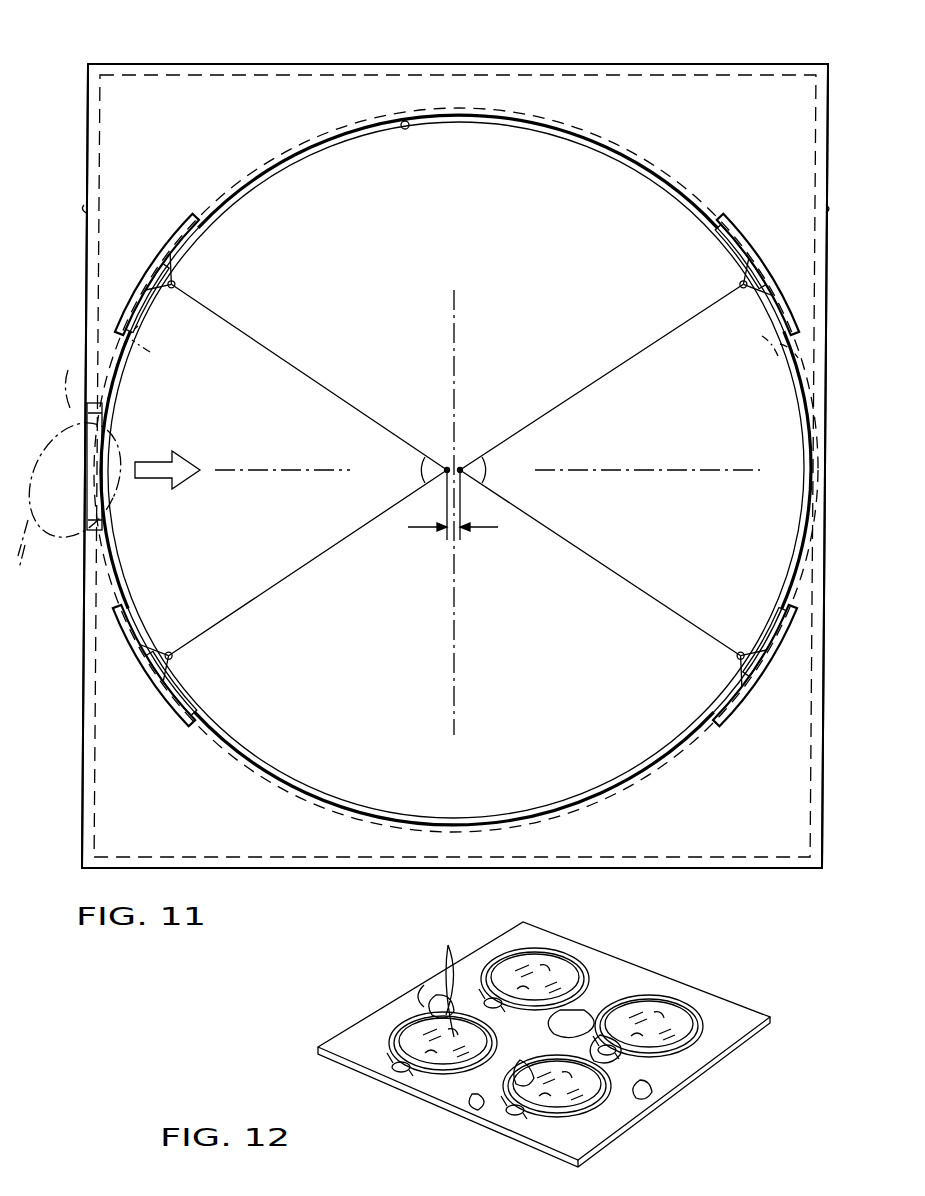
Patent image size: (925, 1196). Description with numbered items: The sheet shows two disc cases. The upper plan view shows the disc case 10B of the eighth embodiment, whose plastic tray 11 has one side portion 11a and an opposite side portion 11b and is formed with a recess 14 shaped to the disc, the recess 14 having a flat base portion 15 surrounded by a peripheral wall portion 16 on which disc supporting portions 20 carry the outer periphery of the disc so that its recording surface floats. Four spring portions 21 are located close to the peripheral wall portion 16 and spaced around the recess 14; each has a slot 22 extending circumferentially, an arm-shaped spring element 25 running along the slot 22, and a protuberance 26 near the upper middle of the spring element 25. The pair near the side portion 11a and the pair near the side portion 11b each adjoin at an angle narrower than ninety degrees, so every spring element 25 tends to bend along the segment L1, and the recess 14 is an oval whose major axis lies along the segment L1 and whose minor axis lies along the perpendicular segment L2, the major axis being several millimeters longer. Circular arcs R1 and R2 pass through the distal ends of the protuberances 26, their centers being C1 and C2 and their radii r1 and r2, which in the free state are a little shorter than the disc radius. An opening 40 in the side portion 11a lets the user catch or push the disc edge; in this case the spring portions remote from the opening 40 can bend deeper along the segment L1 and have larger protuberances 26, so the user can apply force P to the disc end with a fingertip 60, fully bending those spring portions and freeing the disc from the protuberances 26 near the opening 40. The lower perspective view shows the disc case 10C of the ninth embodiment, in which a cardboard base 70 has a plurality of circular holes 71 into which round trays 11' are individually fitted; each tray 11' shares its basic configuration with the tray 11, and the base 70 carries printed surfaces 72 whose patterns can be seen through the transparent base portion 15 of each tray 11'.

In FIG. 11, the disc case 10B is at (734, 68).
In FIG. 12, the disc case 10C is at (420, 968).
In FIG. 11, the tray 11 is at (455, 448).
In FIG. 11, the one side portion 11a is at (86, 200).
In FIG. 11, the other side portion 11b is at (820, 204).
In FIG. 12, the round tray 11' is at (585, 1046).
In FIG. 11, the recess 14 is at (451, 215).
In FIG. 11, the base portion 15 is at (348, 152).
In FIG. 12, the base portion 15 is at (428, 1036).
In FIG. 11, the peripheral wall portion 16 is at (407, 124).
In FIG. 11, the disc supporting portions 20 is at (500, 124).
In FIG. 11, the spring portions 21 is at (202, 266).
In FIG. 11, the slot 22 is at (172, 244).
In FIG. 11, the spring element 25 is at (144, 286).
In FIG. 11, the protuberance 26 is at (176, 290).
In FIG. 11, the opening 40 is at (103, 444).
In FIG. 12, the opening 40 is at (396, 1072).
In FIG. 11, the fingertip 60 is at (70, 398).
In FIG. 12, the base 70 is at (658, 976).
In FIG. 12, the circular holes 71 is at (402, 1040).
In FIG. 12, the printed surfaces 72 is at (535, 1013).
In FIG. 11, the segment L1 is at (259, 460).
In FIG. 11, the segment L2 is at (470, 325).
In FIG. 11, the center C1 is at (447, 468).
In FIG. 11, the center C2 is at (460, 468).
In FIG. 11, the radius of curvature r1 is at (320, 380).
In FIG. 11, the radius of curvature r2 is at (578, 384).
In FIG. 11, the circular arc R1 is at (157, 356).
In FIG. 11, the circular arc R2 is at (764, 366).
In FIG. 11, the force P is at (160, 482).